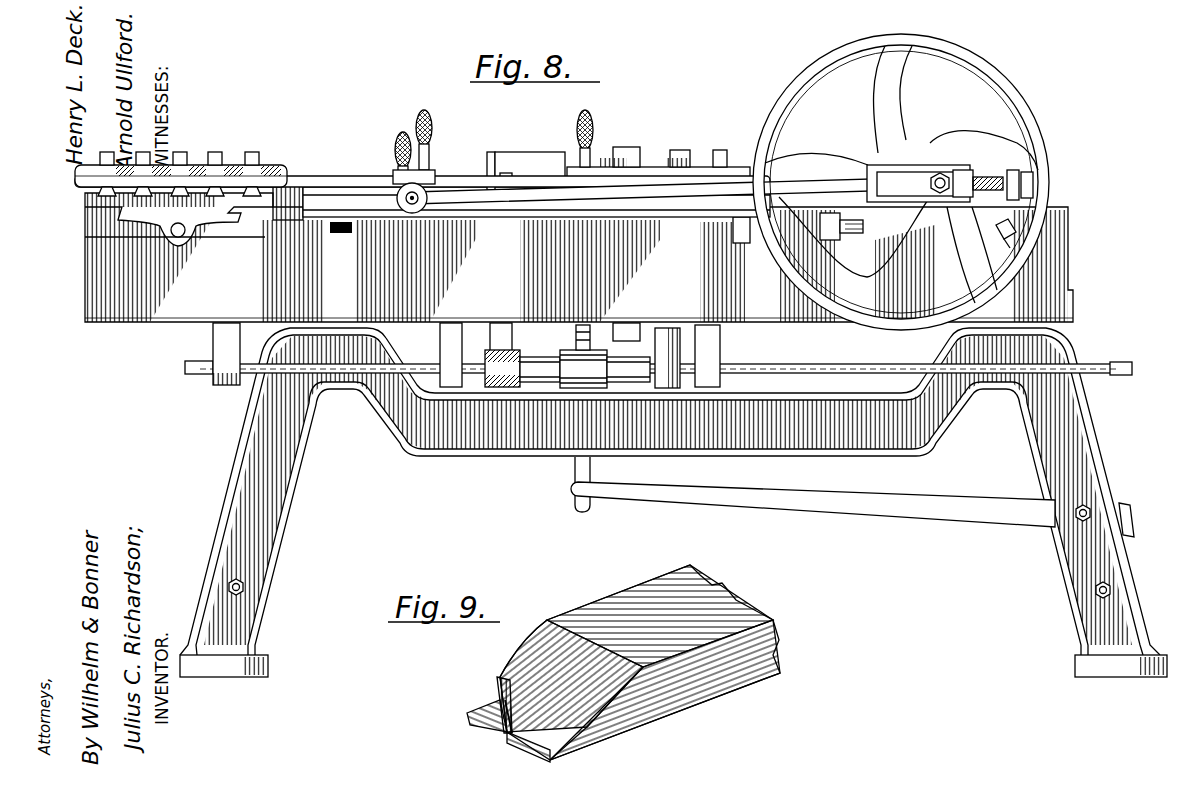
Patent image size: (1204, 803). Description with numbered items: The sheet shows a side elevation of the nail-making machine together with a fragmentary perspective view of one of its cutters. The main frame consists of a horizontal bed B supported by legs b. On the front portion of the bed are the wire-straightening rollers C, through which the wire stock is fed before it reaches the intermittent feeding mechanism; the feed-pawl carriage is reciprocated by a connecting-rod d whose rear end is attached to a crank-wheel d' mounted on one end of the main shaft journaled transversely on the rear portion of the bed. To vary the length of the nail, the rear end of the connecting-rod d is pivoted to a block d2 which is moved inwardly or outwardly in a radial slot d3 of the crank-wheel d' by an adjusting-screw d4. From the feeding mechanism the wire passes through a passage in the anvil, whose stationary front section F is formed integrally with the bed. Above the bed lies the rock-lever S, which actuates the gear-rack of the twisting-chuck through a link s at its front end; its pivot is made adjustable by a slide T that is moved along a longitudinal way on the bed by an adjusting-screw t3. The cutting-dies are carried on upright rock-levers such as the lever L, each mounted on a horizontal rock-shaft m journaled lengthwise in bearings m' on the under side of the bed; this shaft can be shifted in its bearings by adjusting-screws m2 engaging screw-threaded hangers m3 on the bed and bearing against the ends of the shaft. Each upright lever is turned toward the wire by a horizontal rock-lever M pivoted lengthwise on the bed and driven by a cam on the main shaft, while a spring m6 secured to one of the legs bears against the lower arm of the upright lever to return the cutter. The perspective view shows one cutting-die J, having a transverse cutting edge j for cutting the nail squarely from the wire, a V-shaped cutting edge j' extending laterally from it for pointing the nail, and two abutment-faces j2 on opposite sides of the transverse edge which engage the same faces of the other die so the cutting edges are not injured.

In FIG. 8, the crank-wheel d' is at (901, 174).
In FIG. 8, the block d2 is at (935, 172).
In FIG. 8, the radial slot d3 is at (890, 172).
In FIG. 8, the adjusting-screw d4 is at (1010, 176).
In FIG. 8, the horizontal rock-lever M is at (745, 180).
In FIG. 8, the rock-lever S is at (640, 185).
In FIG. 8, the stationary front anvil section F is at (510, 148).
In FIG. 8, the link s is at (512, 176).
In FIG. 8, the wire-straightening rollers C is at (181, 168).
In FIG. 8, the horizontal bed B is at (200, 296).
In FIG. 8, the connecting-rod d is at (668, 209).
In FIG. 8, the slide T is at (737, 243).
In FIG. 8, the adjusting-screw t3 is at (841, 240).
In FIG. 8, the adjusting-screws m2 is at (196, 364).
In FIG. 8, the screw-threaded hangers m3 is at (450, 372).
In FIG. 8, the horizontal rock-shaft m is at (585, 355).
In FIG. 8, the bearings m' is at (585, 374).
In FIG. 8, the spring m6 is at (813, 504).
In FIG. 8, the upright rock-lever L is at (560, 478).
In FIG. 8, the legs b is at (673, 502).
In FIG. 9, the cutting-die J is at (640, 662).
In FIG. 9, the transverse cutting edge j is at (493, 741).
In FIG. 9, the V-shaped cutting edge j' is at (509, 703).
In FIG. 9, the abutment-faces j2 is at (470, 718).